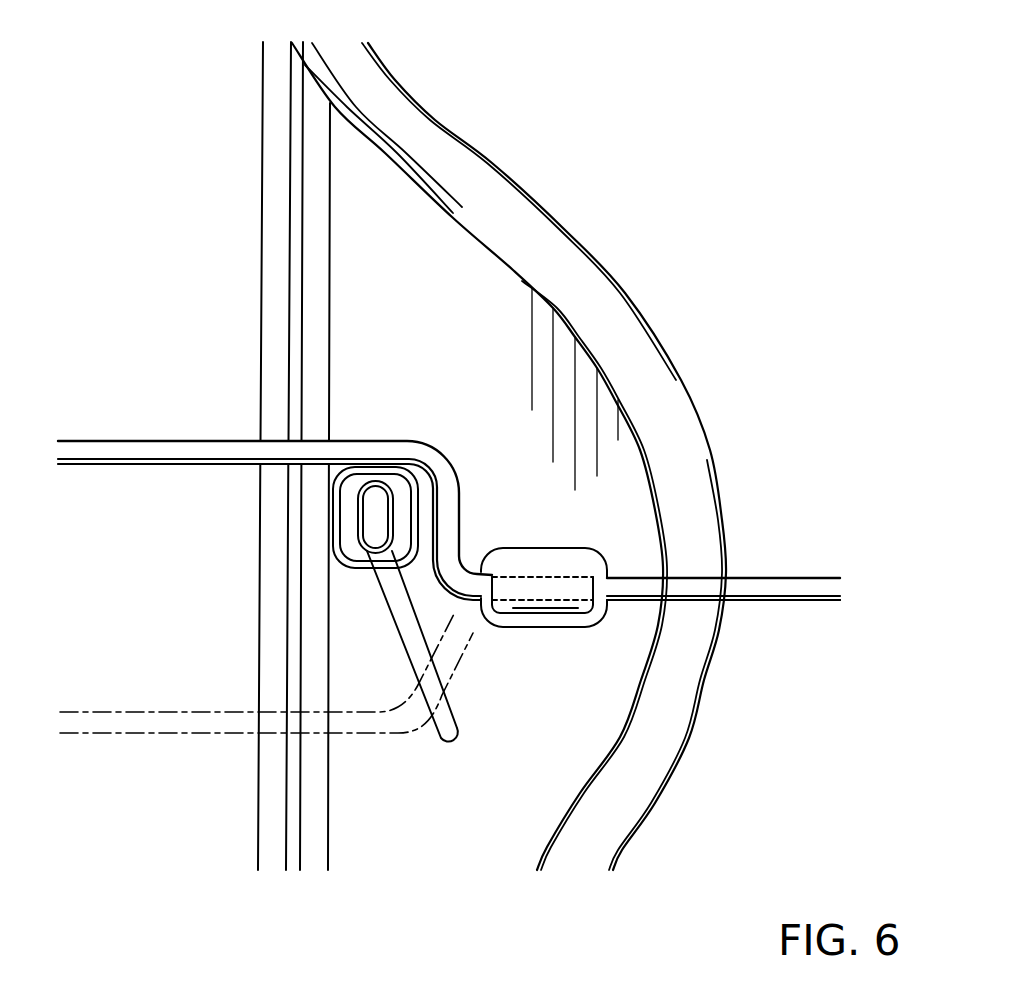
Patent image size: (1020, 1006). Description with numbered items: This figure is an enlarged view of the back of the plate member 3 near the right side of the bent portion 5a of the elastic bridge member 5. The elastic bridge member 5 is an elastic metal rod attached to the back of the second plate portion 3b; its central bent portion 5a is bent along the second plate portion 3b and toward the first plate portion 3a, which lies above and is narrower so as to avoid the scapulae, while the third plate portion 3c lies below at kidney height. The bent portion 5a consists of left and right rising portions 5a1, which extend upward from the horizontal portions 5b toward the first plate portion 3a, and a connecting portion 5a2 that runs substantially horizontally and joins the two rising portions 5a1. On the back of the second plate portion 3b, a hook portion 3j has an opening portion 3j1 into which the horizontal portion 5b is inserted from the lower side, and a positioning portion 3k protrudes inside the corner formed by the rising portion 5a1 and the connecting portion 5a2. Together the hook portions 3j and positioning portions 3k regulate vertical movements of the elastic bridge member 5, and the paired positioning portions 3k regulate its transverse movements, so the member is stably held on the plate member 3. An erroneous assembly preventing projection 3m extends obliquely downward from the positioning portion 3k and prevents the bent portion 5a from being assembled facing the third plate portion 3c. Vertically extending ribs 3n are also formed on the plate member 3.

The plate member 3 is at (488, 162).
The first plate portion 3a is at (233, 90).
The second plate portion 3b is at (488, 280).
The third plate portion 3c is at (512, 852).
The hook portion 3j is at (553, 560).
The opening portion 3j1 is at (557, 592).
The positioning portion 3k is at (375, 500).
The erroneous assembly preventing projection 3m is at (450, 723).
The rib 3n is at (272, 550).
The elastic bridge member 5 is at (823, 562).
The bent portion 5a is at (103, 422).
The rising portion 5a1 is at (447, 522).
The connecting portion 5a2 is at (145, 455).
The horizontal portion 5b is at (814, 597).